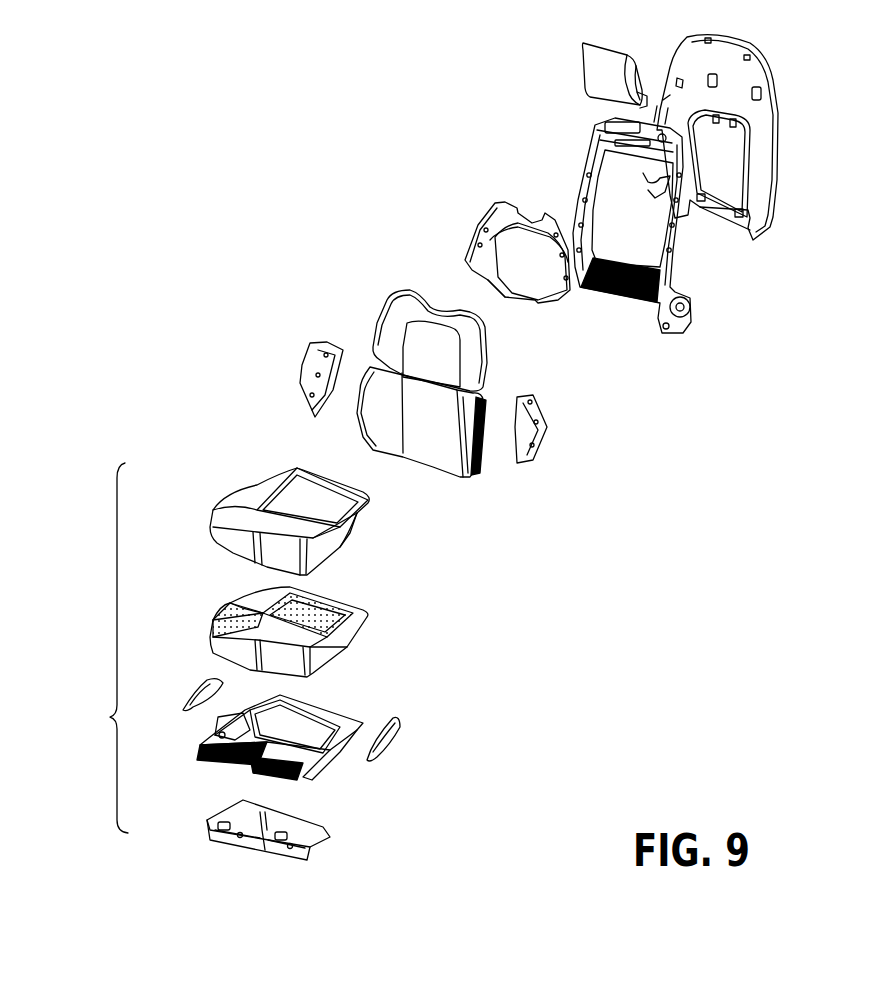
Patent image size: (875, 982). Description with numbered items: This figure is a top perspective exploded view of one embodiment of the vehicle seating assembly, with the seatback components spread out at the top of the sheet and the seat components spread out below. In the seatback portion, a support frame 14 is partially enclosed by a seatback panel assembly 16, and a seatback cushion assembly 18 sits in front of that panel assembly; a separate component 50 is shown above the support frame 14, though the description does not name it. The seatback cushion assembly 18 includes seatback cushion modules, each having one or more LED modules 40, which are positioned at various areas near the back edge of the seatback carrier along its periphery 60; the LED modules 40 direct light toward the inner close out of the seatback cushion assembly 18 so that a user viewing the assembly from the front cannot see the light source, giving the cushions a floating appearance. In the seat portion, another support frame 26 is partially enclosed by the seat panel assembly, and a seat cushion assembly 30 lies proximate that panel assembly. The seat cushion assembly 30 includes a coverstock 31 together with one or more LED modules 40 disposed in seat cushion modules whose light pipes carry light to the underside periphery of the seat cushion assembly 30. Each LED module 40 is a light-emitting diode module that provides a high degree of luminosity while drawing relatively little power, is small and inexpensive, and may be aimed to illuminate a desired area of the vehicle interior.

The support frame 14 is at (675, 273).
The seatback panel assembly 16 is at (760, 107).
The seatback cushion assembly 18 is at (392, 328).
The support frame 26 is at (343, 713).
The seat cushion assembly 30 is at (240, 600).
The coverstock 31 is at (221, 488).
The LED module 40 is at (183, 683).
The headrest 50 is at (585, 65).
The periphery 60 is at (465, 228).